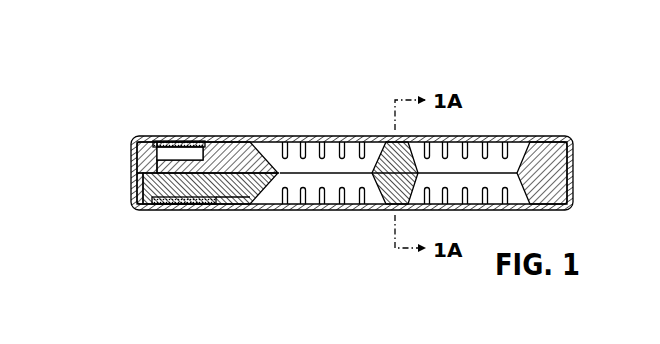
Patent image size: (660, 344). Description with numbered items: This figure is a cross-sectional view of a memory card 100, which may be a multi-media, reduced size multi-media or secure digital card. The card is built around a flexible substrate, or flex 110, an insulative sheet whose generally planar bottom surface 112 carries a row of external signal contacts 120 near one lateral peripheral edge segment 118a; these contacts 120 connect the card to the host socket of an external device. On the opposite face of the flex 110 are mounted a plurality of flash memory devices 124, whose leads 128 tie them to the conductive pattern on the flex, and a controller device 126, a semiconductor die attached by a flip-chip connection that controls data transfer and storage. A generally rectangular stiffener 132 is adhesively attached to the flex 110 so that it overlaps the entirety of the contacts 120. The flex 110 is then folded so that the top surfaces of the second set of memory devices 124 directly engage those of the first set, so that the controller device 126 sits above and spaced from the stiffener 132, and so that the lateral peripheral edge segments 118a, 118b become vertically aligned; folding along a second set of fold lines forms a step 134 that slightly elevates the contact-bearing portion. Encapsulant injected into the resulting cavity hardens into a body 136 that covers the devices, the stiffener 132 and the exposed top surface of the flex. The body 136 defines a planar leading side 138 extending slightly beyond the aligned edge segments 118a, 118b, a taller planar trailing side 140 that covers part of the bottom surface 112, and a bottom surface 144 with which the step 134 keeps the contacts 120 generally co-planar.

The memory card 100 is at (349, 179).
The flexible substrate (flex) 110 is at (366, 214).
The bottom surface 112 is at (333, 211).
The lateral peripheral edge segment 118a is at (150, 206).
The lateral peripheral edge segment 118b is at (150, 140).
The external signal contacts 120 is at (172, 212).
The memory devices 124 is at (330, 141).
The controller device 126 is at (190, 146).
The leads 128 is at (294, 212).
The stiffener 132 is at (134, 156).
The step 134 is at (230, 210).
The body 136 is at (248, 140).
The leading side 138 is at (140, 181).
The trailing side 140 is at (572, 196).
The bottom surface of the body 144 is at (136, 196).